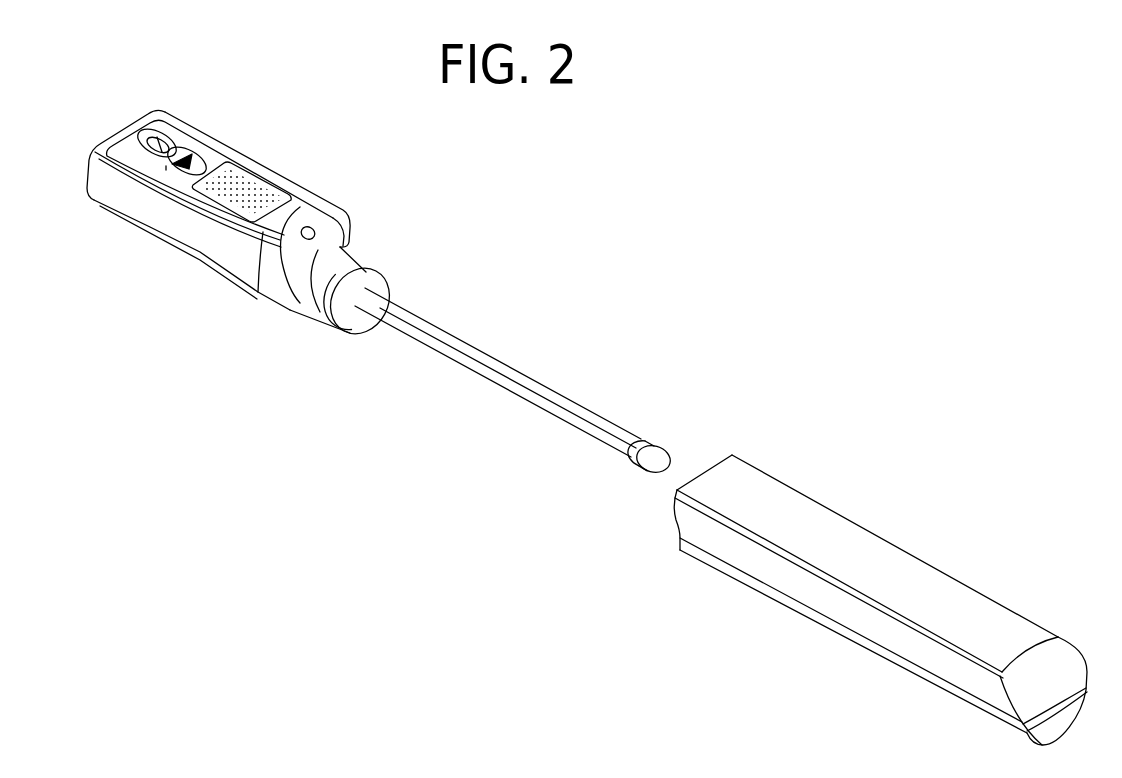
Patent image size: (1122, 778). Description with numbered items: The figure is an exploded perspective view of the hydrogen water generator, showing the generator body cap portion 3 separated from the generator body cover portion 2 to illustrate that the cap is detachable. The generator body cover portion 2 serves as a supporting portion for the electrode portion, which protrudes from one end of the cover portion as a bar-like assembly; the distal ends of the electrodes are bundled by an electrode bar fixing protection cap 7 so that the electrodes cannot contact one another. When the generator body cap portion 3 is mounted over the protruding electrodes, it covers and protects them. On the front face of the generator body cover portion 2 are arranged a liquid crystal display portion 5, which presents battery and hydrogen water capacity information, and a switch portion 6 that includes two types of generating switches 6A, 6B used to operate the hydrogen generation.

The generator body cover portion 2 is at (137, 223).
The generator body cap portion 3 is at (1000, 603).
The liquid crystal display portion 5 is at (250, 184).
The switch portion 6 is at (207, 110).
The generating switch 6A is at (197, 155).
The generating switch 6B is at (166, 138).
The electrode bar fixing protection cap 7 is at (659, 444).